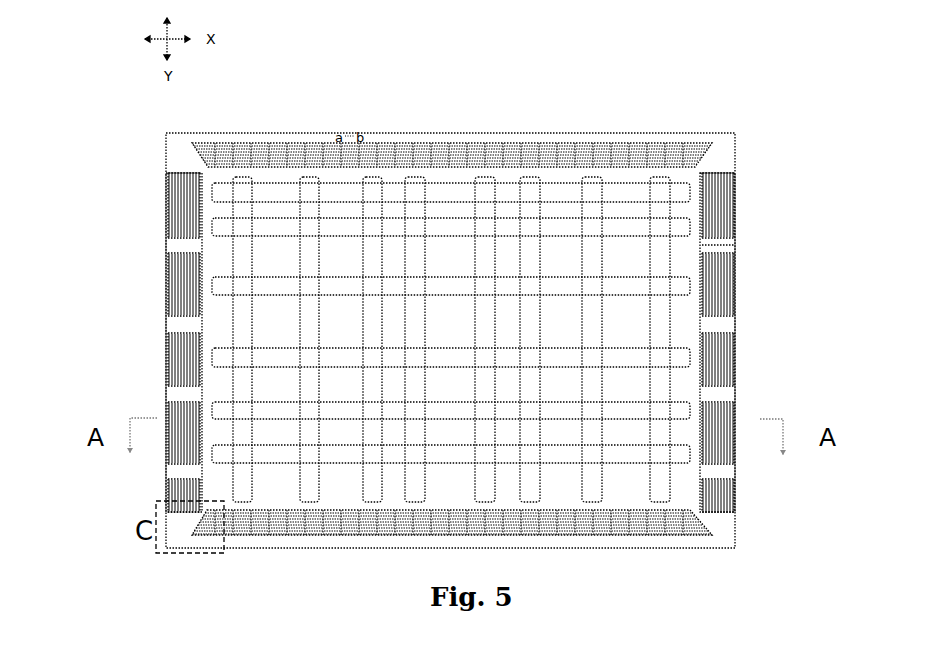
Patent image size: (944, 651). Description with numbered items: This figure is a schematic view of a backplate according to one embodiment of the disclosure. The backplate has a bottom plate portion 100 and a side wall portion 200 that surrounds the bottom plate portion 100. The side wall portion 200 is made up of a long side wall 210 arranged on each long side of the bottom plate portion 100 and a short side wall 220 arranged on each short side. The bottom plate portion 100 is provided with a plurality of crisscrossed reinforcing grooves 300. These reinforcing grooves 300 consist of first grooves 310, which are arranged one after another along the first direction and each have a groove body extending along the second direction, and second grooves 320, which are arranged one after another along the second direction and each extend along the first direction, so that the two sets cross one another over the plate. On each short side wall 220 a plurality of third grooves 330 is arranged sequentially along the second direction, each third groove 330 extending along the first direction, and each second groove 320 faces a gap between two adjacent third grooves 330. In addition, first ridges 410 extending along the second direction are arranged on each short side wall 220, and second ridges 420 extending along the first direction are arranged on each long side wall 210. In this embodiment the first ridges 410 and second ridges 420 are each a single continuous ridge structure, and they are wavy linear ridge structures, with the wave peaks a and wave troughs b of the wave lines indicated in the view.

The bottom plate portion 100 is at (623, 393).
The side wall portion 200 is at (785, 105).
The long side wall 210 is at (673, 130).
The short side wall 220 is at (732, 212).
The reinforcing grooves 300 is at (791, 238).
The first grooves 310 is at (647, 310).
The second grooves 320 is at (683, 283).
The third grooves 330 is at (712, 240).
The first ridges 410 is at (160, 167).
The second ridges 420 is at (323, 143).